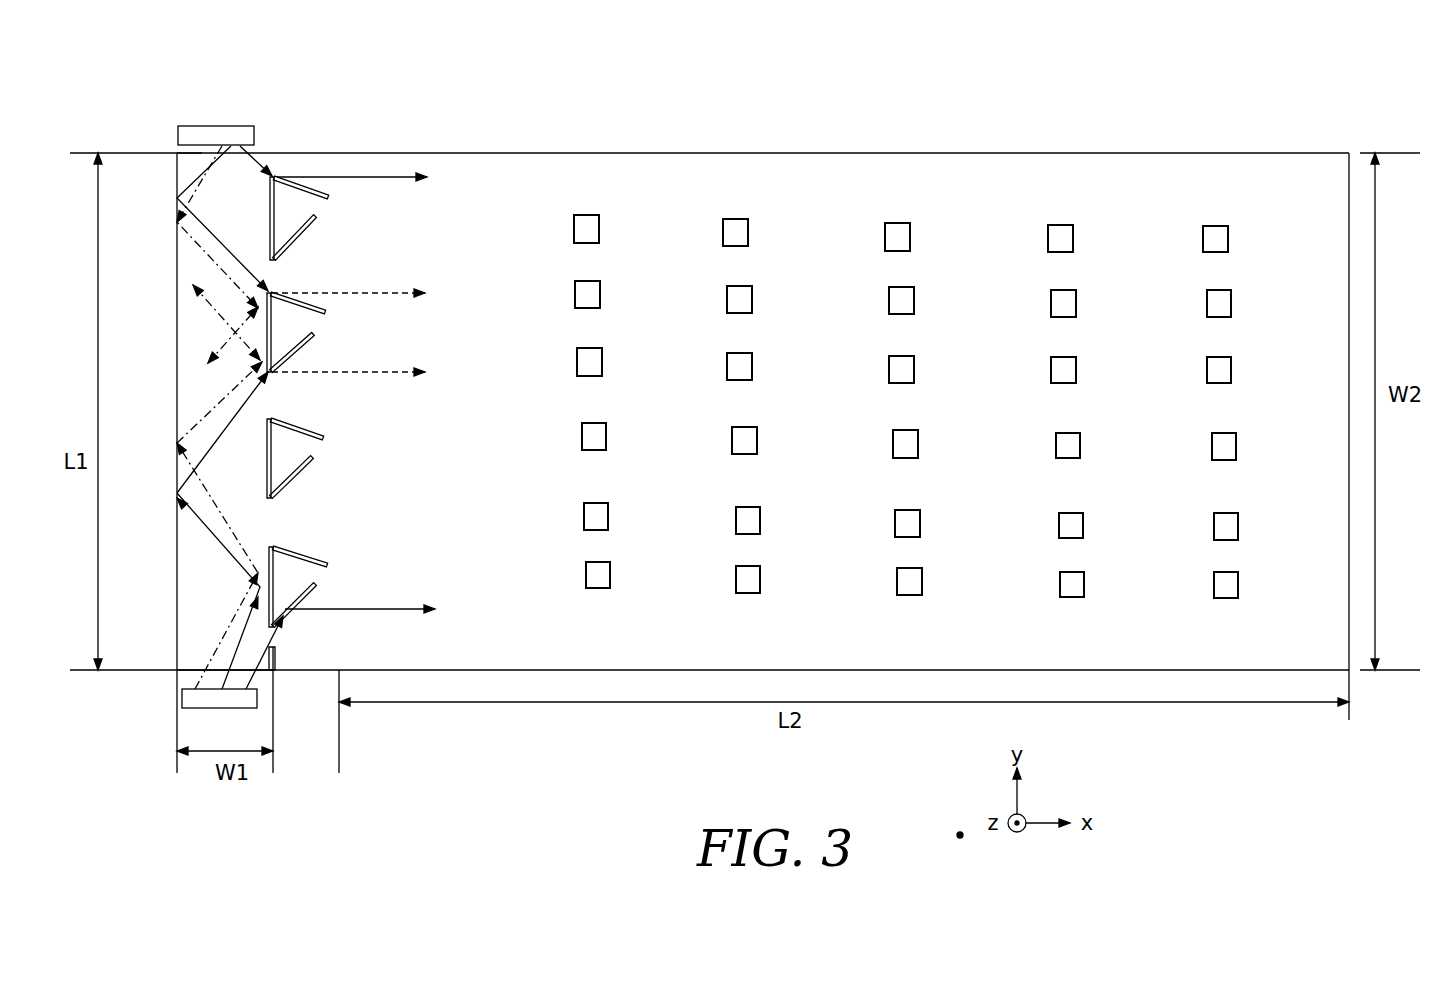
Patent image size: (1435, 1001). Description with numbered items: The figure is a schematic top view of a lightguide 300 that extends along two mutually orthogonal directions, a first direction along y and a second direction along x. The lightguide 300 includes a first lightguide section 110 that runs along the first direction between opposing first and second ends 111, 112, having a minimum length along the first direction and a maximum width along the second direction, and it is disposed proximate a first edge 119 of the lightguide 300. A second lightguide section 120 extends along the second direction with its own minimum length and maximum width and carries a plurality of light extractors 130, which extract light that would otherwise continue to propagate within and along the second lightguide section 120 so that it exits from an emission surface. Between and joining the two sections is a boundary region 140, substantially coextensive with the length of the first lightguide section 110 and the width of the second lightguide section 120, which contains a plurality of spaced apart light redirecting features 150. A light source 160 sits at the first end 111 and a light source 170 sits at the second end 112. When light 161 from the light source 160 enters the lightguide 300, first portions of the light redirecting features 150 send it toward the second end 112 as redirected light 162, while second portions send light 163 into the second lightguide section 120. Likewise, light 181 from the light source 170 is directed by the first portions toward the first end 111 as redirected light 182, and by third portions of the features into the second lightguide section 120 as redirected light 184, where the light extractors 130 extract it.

The first lightguide section 110 is at (188, 428).
The first end 111 is at (188, 672).
The second end 112 is at (202, 153).
The first edge 119 is at (177, 418).
The second lightguide section 120 is at (766, 167).
The light extractors 130 is at (1060, 239).
The boundary region 140 is at (348, 361).
The light redirecting features 150 is at (330, 220).
The light source 160 is at (188, 700).
The light 161 is at (253, 672).
The redirected light 162 is at (212, 530).
The light 163 is at (240, 411).
The light source 170 is at (178, 133).
The light 181 is at (265, 157).
The redirected light 182 is at (223, 348).
The redirected light 184 is at (397, 293).
The lightguide 300 is at (1294, 763).